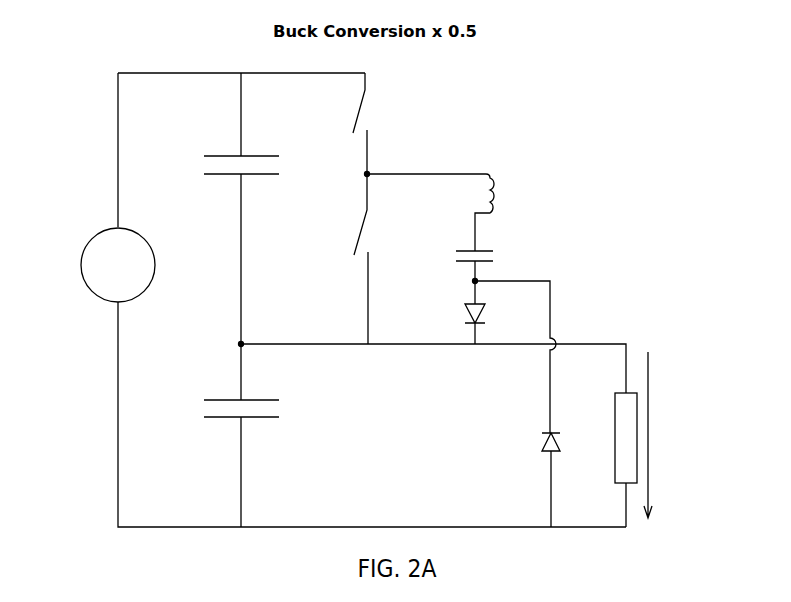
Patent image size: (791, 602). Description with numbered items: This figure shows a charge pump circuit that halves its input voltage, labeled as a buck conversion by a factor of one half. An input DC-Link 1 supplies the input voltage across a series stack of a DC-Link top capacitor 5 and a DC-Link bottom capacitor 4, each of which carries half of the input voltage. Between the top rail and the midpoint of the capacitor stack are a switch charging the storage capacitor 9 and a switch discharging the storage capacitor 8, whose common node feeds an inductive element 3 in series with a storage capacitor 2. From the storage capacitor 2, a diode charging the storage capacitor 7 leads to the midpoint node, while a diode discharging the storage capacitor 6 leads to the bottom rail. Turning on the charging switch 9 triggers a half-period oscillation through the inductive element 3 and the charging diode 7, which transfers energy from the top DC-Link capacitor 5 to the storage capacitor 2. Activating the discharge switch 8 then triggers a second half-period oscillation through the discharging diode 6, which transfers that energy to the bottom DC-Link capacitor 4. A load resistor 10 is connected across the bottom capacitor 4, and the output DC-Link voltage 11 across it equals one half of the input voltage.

The input DC-Link 1 is at (110, 265).
The storage capacitor 2 is at (466, 264).
The inductive element 3 is at (430, 212).
The DC-Link bottom capacitor 4 is at (235, 421).
The DC-Link top capacitor 5 is at (234, 160).
The diode discharging the storage capacitor 6 is at (540, 479).
The diode charging the storage capacitor 7 is at (483, 312).
The switch discharging the storage capacitor 8 is at (370, 259).
The switch charging the storage capacitor 9 is at (370, 123).
The load resistor 10 is at (614, 427).
The output DC-Link voltage 11 is at (660, 428).